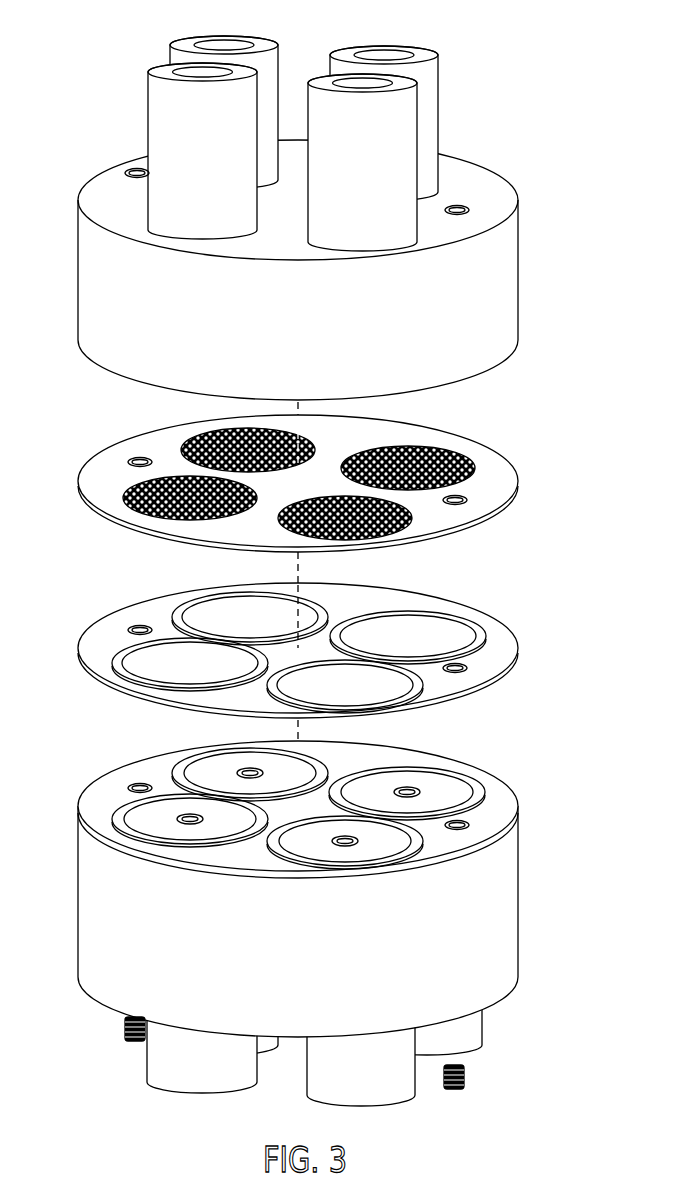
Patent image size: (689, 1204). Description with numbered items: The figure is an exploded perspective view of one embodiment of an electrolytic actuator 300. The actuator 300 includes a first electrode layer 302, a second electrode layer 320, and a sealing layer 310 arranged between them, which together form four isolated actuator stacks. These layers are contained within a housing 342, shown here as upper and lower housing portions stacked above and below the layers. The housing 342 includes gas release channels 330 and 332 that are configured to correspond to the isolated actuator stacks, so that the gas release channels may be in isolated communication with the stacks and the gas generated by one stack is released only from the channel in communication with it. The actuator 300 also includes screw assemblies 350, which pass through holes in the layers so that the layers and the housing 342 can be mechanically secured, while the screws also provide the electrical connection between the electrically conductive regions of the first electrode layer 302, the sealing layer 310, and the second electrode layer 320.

The actuator 300 is at (298, 583).
The first electrode layer 302 is at (513, 431).
The sealing layer 310 is at (509, 611).
The second electrode layer 320 is at (466, 866).
The gas release channels 330 is at (153, 93).
The gas release channels 332 is at (250, 1067).
The housing 342 is at (97, 279).
The screw assemblies 350 is at (142, 170).